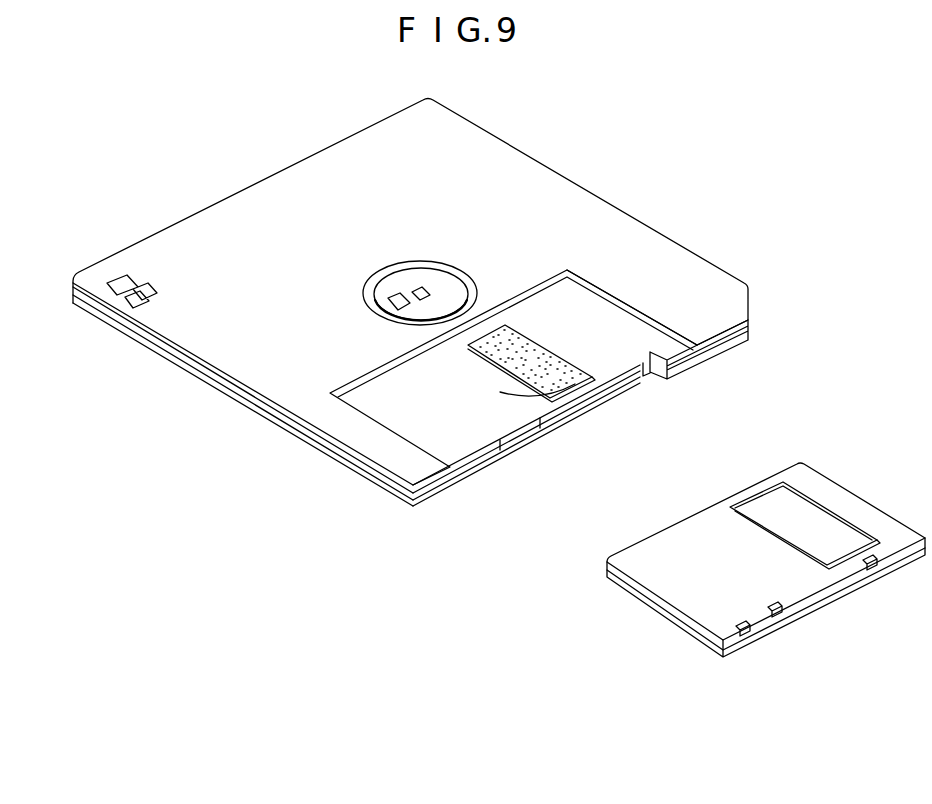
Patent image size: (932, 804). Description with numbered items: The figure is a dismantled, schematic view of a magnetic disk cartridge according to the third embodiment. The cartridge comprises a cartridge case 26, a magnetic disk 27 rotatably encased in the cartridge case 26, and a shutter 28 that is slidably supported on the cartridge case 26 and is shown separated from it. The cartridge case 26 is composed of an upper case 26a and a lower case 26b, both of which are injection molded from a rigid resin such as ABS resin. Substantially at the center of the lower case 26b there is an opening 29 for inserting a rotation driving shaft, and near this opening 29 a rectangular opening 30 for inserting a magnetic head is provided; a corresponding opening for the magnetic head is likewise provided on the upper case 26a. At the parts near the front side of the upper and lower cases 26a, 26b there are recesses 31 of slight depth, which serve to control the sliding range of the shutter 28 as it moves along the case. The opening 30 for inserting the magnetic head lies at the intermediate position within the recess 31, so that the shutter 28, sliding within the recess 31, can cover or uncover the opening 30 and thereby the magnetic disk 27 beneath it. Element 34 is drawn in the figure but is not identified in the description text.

The cartridge case 26 is at (410, 303).
The upper case 26a is at (233, 372).
The lower case 26b is at (252, 402).
The magnetic disk 27 is at (512, 343).
The shutter 28 is at (698, 608).
The opening for inserting a rotation driving shaft 29 is at (399, 271).
The rectangular opening for inserting a magnetic head 30 is at (540, 360).
The recess 31 is at (632, 313).
The hub 34 is at (447, 277).